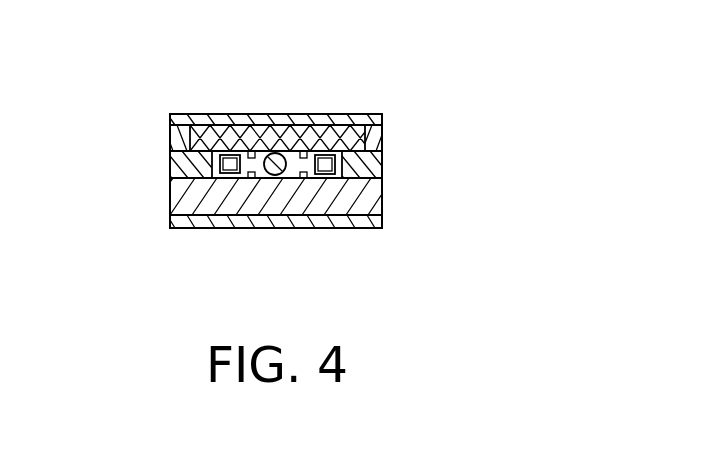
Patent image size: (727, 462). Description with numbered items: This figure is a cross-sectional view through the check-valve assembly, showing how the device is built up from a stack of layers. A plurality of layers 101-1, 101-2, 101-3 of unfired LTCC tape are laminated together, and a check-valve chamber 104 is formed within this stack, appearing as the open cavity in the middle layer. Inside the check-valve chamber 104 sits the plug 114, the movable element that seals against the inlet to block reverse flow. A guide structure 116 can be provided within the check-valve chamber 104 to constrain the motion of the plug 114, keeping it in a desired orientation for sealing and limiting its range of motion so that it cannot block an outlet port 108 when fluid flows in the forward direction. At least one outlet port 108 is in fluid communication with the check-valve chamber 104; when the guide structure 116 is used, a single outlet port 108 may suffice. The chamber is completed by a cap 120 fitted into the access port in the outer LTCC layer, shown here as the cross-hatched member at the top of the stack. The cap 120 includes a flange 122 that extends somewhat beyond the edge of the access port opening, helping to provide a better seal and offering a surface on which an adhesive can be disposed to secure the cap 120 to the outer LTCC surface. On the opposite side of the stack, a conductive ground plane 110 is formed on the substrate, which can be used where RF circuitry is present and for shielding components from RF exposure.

The LTCC tape layer 101-1 is at (383, 137).
The LTCC tape layer 101-2 is at (383, 168).
The LTCC tape layer 101-3 is at (383, 199).
The check-valve chamber 104 is at (340, 176).
The outlet port 108 is at (220, 157).
The conductive ground plane 110 is at (197, 228).
The plug 114 is at (266, 172).
The guide structure 116 is at (252, 178).
The cap 120 is at (273, 113).
The flange 122 is at (187, 113).